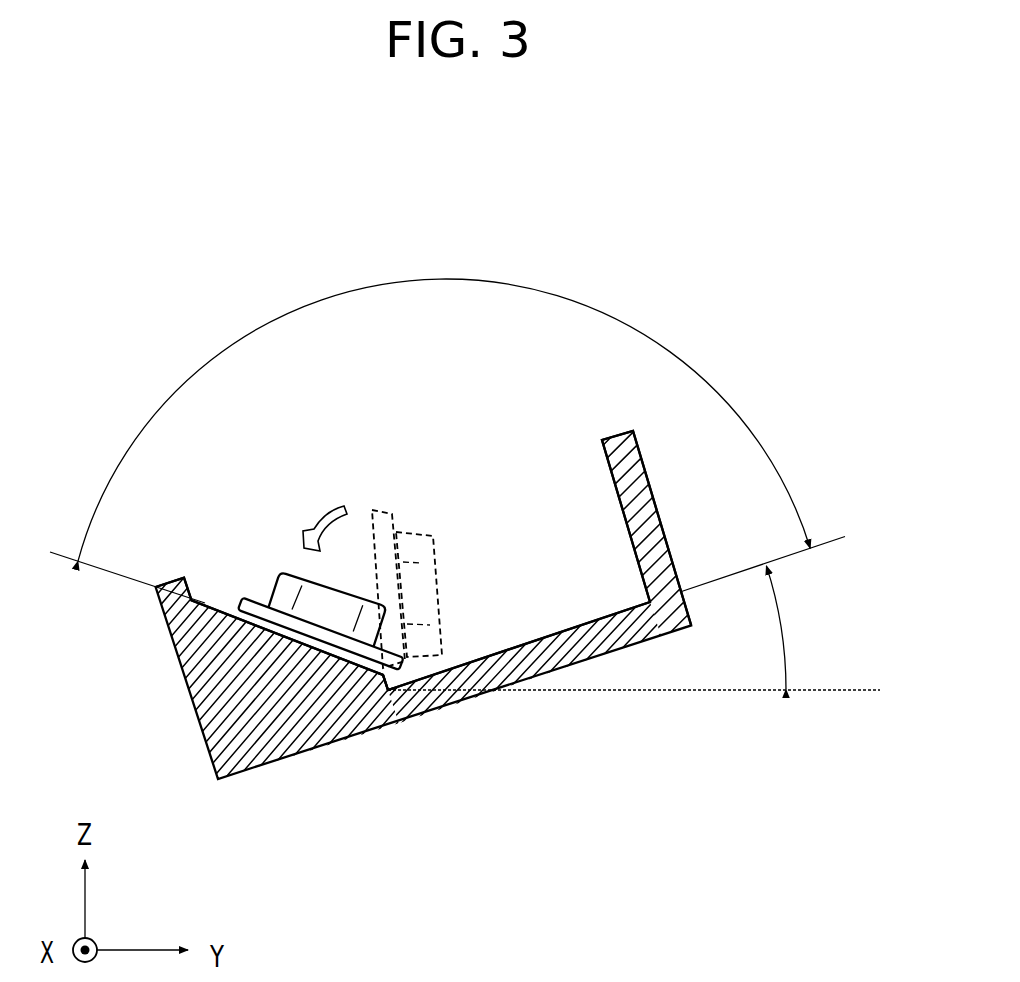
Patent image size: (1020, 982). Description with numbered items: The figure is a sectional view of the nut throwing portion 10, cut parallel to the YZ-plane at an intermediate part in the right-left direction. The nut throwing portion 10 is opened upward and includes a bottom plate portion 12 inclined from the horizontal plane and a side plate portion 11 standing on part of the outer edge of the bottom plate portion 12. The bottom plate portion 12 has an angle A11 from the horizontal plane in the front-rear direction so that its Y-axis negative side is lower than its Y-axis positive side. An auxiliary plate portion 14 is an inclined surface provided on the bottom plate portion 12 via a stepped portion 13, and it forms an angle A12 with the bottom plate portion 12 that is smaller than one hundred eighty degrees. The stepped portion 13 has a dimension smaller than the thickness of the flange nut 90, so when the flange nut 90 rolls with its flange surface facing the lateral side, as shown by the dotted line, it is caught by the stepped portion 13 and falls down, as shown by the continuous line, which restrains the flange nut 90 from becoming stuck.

The nut throwing portion 10 is at (226, 278).
The side plate portion 11 is at (615, 434).
The bottom plate portion 12 is at (609, 615).
The stepped portion 13 is at (388, 686).
The auxiliary plate portion 14 is at (212, 607).
The flange nut 90 is at (284, 571).
The angle A11 is at (634, 628).
The angle A12 is at (447, 422).